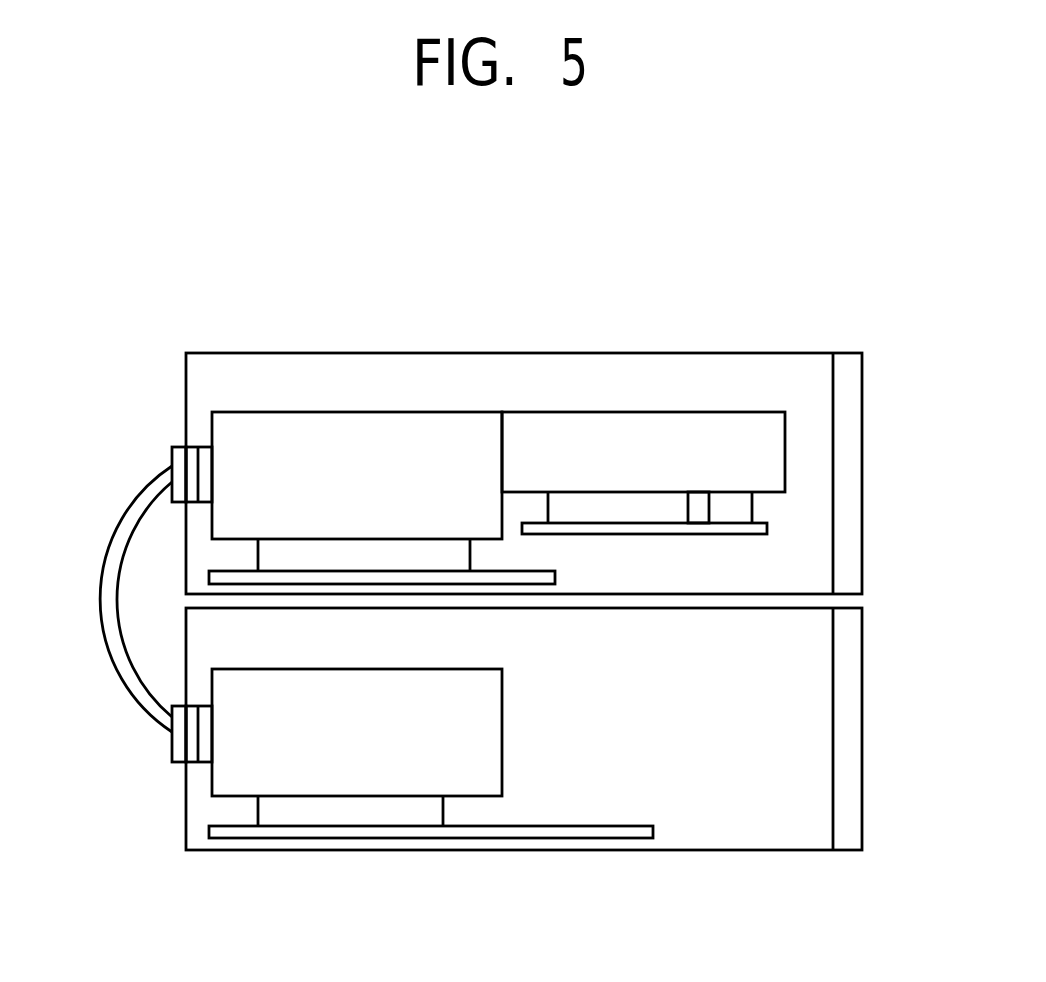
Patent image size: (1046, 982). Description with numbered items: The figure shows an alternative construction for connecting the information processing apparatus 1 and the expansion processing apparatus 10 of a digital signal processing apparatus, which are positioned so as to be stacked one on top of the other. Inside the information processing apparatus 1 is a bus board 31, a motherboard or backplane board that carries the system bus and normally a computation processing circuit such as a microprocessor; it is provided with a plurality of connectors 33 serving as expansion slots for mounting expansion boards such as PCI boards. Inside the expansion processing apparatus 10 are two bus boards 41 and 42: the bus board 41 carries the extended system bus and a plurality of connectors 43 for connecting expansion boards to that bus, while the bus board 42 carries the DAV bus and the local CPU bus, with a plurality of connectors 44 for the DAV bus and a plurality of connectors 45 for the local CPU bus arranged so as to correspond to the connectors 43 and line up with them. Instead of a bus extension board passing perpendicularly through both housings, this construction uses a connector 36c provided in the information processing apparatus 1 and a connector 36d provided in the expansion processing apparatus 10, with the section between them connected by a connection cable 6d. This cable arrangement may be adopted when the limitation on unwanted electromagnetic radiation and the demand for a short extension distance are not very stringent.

The information processing apparatus 1 is at (464, 795).
The expansion processing apparatus 10 is at (498, 398).
The bus board 31 is at (510, 830).
The connectors 33 is at (352, 810).
The connector 36c is at (171, 739).
The connector 36d is at (173, 460).
The connection cable 6d is at (130, 698).
The bus board 41 is at (382, 578).
The bus board 42 is at (767, 523).
The connectors 43 is at (305, 552).
The connectors 44 is at (638, 501).
The connectors 45 is at (735, 501).